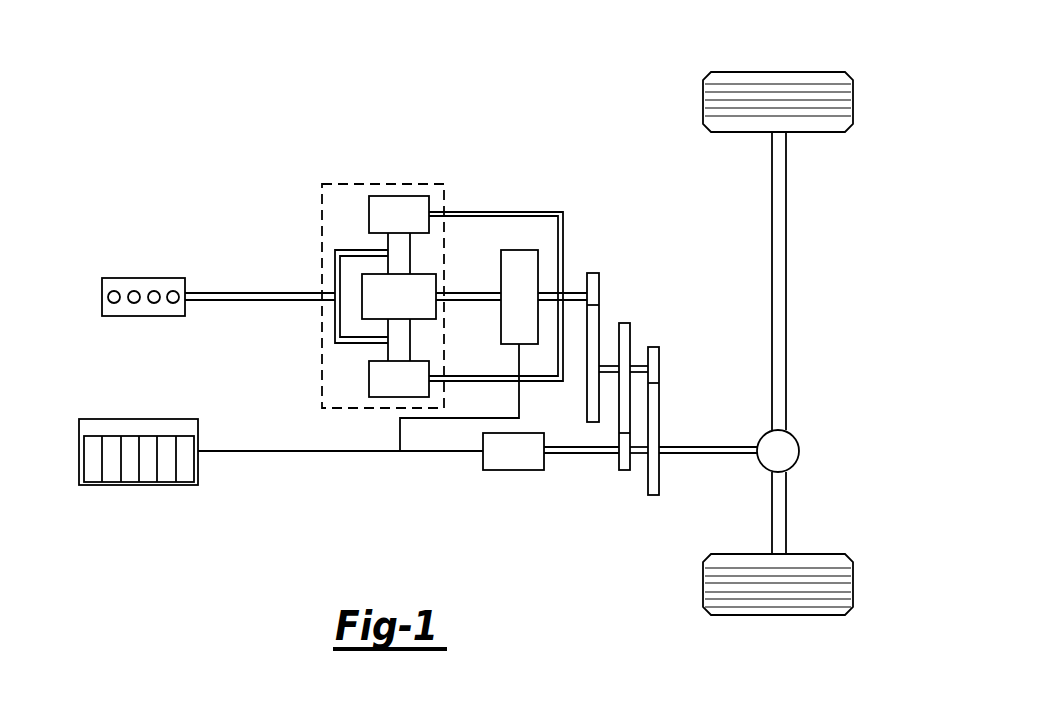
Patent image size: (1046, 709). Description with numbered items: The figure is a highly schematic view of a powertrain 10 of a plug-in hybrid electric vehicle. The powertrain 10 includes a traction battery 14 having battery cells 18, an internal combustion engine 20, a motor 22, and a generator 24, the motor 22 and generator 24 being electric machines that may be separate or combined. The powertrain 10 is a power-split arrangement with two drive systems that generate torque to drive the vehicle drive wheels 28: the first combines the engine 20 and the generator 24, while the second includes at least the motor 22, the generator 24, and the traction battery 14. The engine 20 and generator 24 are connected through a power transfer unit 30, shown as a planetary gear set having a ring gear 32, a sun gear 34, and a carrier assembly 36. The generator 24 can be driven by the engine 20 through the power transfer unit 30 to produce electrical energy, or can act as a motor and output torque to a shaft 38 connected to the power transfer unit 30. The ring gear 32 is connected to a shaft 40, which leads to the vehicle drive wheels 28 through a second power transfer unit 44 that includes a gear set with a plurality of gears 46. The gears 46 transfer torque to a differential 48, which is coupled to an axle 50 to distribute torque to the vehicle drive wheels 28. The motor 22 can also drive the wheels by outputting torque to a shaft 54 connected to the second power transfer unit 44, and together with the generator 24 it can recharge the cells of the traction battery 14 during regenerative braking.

The powertrain 10 is at (180, 106).
The traction battery 14 is at (140, 419).
The battery cells 18 is at (108, 482).
The internal combustion engine 20 is at (102, 278).
The motor 22 is at (513, 470).
The generator 24 is at (538, 262).
The vehicle drive wheels 28 is at (778, 72).
The power transfer unit 30 is at (446, 186).
The ring gear 32 is at (369, 216).
The sun gear 34 is at (436, 320).
The carrier assembly 36 is at (335, 275).
The shaft 38 is at (470, 290).
The shaft 40 is at (575, 303).
The second power transfer unit 44 is at (675, 291).
The gears 46 is at (599, 288).
The differential 48 is at (799, 451).
The axle 50 is at (786, 283).
The shaft 54 is at (583, 455).